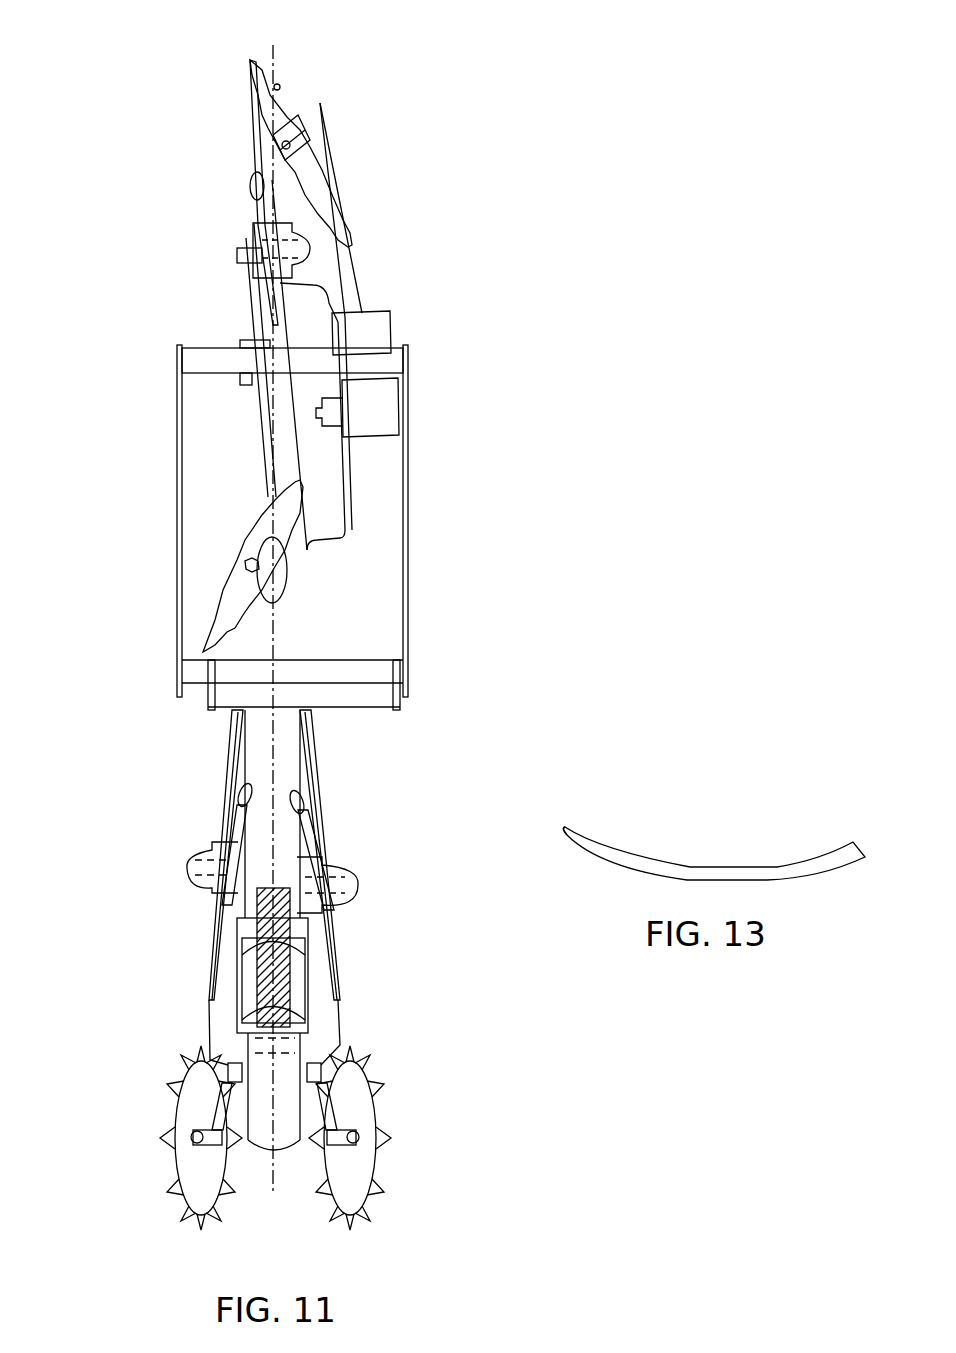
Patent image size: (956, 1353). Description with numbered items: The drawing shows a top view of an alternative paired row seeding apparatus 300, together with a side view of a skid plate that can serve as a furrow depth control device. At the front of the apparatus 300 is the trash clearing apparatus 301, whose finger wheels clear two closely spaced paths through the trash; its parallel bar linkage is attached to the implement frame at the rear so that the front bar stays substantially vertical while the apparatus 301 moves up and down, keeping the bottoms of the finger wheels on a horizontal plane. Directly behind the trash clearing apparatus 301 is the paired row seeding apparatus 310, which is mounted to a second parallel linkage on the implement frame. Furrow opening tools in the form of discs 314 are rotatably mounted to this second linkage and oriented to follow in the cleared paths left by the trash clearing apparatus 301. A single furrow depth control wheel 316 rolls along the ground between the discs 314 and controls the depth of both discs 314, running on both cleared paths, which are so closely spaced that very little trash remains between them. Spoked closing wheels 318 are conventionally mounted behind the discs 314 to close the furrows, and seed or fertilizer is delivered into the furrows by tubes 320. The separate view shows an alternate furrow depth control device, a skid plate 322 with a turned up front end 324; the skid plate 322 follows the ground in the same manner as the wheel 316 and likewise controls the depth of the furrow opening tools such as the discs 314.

In FIG. 11, the paired row seeding apparatus 300 is at (440, 571).
In FIG. 11, the trash clearing apparatus 301 is at (410, 321).
In FIG. 11, the paired row seeding apparatus 310 is at (160, 940).
In FIG. 11, the discs 314 is at (210, 1000).
In FIG. 11, the furrow depth control wheel 316 is at (293, 1153).
In FIG. 11, the spoked closing wheels 318 is at (178, 1175).
In FIG. 11, the tubes 320 is at (250, 180).
In FIG. 13, the skid plate 322 is at (715, 867).
In FIG. 13, the turned up front end 324 is at (565, 827).